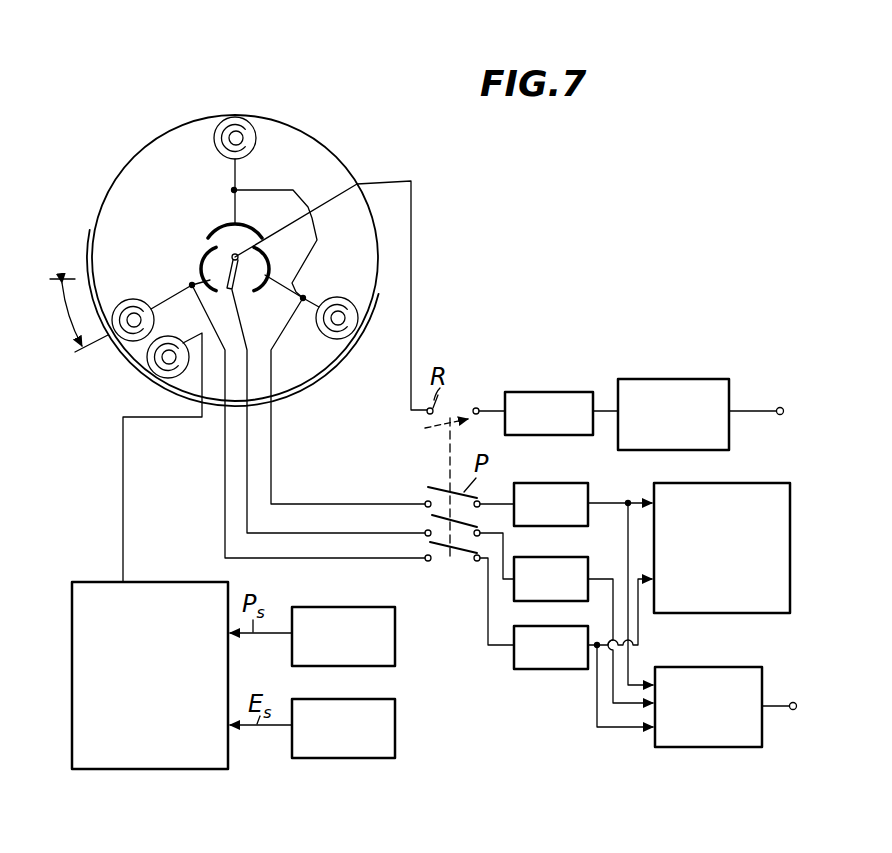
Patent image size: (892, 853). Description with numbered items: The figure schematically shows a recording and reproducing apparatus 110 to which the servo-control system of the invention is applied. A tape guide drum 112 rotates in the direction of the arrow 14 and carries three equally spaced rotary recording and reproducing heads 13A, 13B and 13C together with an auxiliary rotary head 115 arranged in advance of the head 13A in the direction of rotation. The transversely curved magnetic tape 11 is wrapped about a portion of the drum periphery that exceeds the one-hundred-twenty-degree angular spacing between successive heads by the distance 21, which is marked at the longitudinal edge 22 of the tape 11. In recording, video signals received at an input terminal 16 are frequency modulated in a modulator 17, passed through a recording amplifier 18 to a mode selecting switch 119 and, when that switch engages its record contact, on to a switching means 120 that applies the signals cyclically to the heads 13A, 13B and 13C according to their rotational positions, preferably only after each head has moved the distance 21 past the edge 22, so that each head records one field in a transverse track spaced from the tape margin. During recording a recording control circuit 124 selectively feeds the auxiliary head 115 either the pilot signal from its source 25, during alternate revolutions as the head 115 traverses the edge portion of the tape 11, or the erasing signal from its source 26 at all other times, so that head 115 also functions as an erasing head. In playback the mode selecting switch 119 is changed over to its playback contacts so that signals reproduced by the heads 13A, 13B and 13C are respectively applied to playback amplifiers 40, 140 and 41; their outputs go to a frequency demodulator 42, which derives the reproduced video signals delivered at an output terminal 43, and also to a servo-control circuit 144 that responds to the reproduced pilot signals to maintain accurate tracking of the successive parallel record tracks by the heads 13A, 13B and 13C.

The magnetic tape 11 is at (328, 373).
The longitudinal edge of magnetic tape 22 is at (90, 231).
The tape guide drum 112 is at (120, 185).
The distance 21 is at (64, 321).
The rotary recording and reproducing head 13A is at (128, 299).
The rotary recording and reproducing head 13B is at (216, 139).
The rotary recording and reproducing head 13C is at (356, 294).
The auxiliary rotary head 115 is at (150, 352).
The switching means 120 is at (214, 222).
The arrow indicating direction of rotation of drum 14 is at (352, 224).
The recording and reproducing apparatus 110 is at (440, 285).
The mode selecting switch 119 is at (430, 461).
The recording amplifier 18 is at (560, 391).
The modulator 17 is at (706, 384).
The input terminal 16 is at (780, 406).
The playback amplifier 41 is at (564, 528).
The playback amplifier 140 is at (530, 603).
The playback amplifier 40 is at (548, 672).
The servo-control circuit 144 is at (732, 606).
The frequency demodulator 42 is at (757, 745).
The output terminal 43 is at (800, 700).
The recording control circuit 124 is at (150, 770).
The pilot signal source 25 is at (382, 608).
The erasing signal source 26 is at (387, 758).